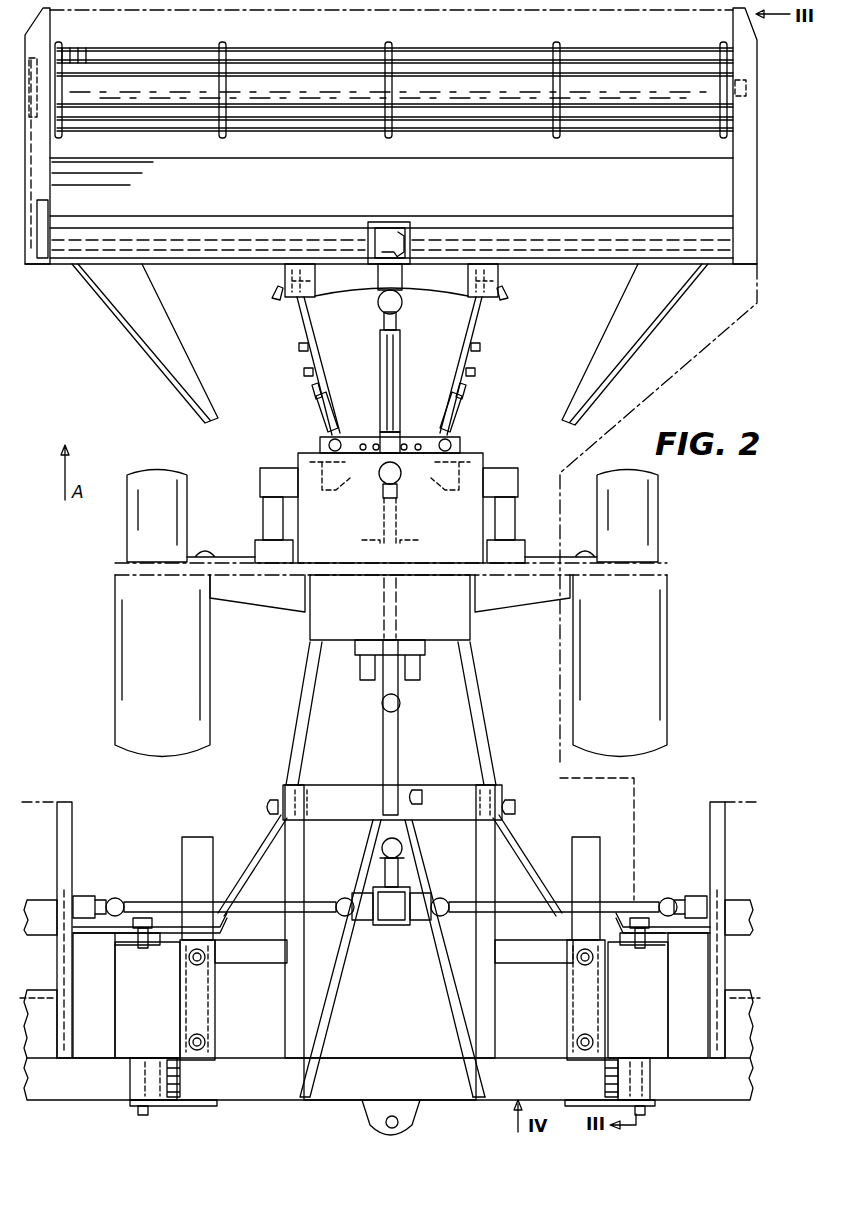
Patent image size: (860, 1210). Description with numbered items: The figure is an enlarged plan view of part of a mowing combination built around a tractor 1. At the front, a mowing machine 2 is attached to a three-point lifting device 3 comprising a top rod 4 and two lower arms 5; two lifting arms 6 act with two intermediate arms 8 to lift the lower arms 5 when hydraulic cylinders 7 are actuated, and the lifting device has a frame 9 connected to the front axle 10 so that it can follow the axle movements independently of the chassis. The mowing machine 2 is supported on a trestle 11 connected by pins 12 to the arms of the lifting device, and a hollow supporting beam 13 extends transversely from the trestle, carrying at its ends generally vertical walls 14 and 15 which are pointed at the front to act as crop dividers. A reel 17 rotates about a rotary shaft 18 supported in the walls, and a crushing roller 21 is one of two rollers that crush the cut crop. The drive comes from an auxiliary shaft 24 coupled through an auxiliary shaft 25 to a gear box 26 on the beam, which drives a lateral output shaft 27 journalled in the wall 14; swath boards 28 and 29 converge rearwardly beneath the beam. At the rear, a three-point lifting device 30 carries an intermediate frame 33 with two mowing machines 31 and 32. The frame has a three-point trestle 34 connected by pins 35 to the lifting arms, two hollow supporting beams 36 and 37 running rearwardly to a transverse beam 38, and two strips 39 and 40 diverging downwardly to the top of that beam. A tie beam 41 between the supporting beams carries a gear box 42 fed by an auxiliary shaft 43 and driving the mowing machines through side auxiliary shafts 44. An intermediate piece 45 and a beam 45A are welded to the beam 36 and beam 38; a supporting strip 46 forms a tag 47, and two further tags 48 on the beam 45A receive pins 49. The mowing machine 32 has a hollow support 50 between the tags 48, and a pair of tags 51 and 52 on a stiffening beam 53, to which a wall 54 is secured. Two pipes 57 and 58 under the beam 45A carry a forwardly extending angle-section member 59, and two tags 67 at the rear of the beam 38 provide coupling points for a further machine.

The tractor 1 is at (470, 620).
The mowing machine 2 is at (714, 266).
The three-point lifting device 3 is at (354, 351).
The top rod 4 is at (382, 372).
The lower arms 5 is at (303, 334).
The lifting arms 6 is at (318, 389).
The hydraulic cylinders 7 is at (322, 413).
The intermediate arms 8 is at (304, 372).
The frame 9 is at (492, 472).
The front axle 10 is at (535, 555).
The trestle 11 is at (337, 287).
The pins 12 is at (283, 296).
The supporting beam 13 is at (576, 264).
The wall 14 is at (40, 264).
The wall 15 is at (730, 264).
The reel 17 is at (562, 44).
The rotary shaft 18 is at (616, 80).
The crushing roller 21 is at (120, 161).
The auxiliary shaft 24 is at (400, 608).
The auxiliary shaft 25 is at (400, 352).
The gear box 26 is at (394, 222).
The output shaft 27 is at (181, 248).
The swath board 28 is at (165, 378).
The swath board 29 is at (612, 375).
The three-point lifting device 30 is at (344, 699).
The mowing machine 31 is at (56, 786).
The mowing machine 32 is at (737, 790).
The intermediate frame 33 is at (258, 1102).
The three-point trestle 34 is at (345, 786).
The pins 35 is at (272, 808).
The supporting beam 36 is at (480, 976).
The supporting beam 37 is at (290, 1010).
The beam 38 is at (423, 1062).
The strip 39 is at (450, 1002).
The strip 40 is at (330, 1032).
The tie beam 41 is at (336, 892).
The gear box 42 is at (380, 926).
The auxiliary shaft 43 is at (400, 848).
The auxiliary shafts 44 is at (276, 900).
The intermediate piece 45 is at (272, 944).
The beam 45A is at (218, 990).
The supporting strip 46 is at (263, 840).
The tag 47 is at (620, 940).
The tags 48 is at (130, 1060).
The pins 49 is at (147, 948).
The support 50 is at (51, 1100).
The tag 51 is at (128, 945).
The tag 52 is at (140, 903).
The stiffening beam 53 is at (108, 1012).
The wall 54 is at (72, 842).
The pipe 57 is at (578, 1044).
The pipe 58 is at (576, 956).
The angle-section member 59 is at (193, 846).
The tags 67 is at (402, 1128).